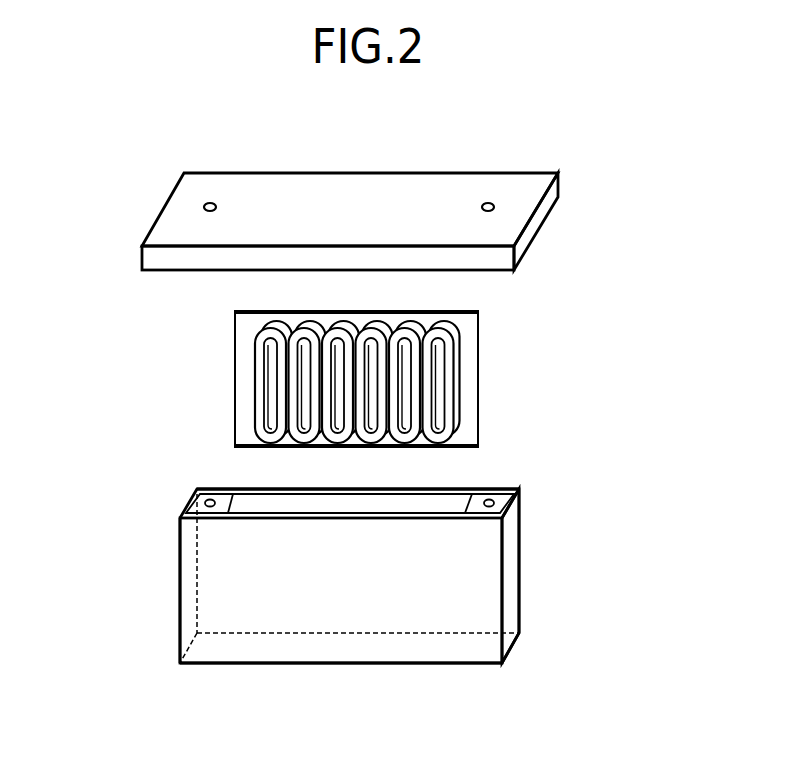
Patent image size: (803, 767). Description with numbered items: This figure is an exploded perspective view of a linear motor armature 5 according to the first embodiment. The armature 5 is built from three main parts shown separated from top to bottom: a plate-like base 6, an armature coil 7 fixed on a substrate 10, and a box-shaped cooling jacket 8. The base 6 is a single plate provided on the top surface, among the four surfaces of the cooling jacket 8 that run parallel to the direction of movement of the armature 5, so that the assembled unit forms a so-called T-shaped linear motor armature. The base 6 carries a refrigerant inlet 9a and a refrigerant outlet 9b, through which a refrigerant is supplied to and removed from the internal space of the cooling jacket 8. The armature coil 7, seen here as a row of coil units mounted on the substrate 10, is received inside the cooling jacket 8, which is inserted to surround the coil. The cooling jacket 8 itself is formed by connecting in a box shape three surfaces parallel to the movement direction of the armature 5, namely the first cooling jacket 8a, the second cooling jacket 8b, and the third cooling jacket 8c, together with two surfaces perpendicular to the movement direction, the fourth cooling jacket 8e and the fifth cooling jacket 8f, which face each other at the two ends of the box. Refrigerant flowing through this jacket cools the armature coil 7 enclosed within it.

The armature 5 is at (154, 146).
The base 6 is at (355, 192).
The refrigerant inlet 9a is at (212, 198).
The refrigerant outlet 9b is at (489, 200).
The substrate 10 is at (241, 378).
The armature coil 7 is at (450, 377).
The cooling jacket 8 is at (527, 613).
The first cooling jacket 8a is at (333, 583).
The second cooling jacket 8b is at (443, 650).
The third cooling jacket 8c is at (443, 502).
The fourth cooling jacket 8e is at (192, 566).
The fifth cooling jacket 8f is at (510, 559).